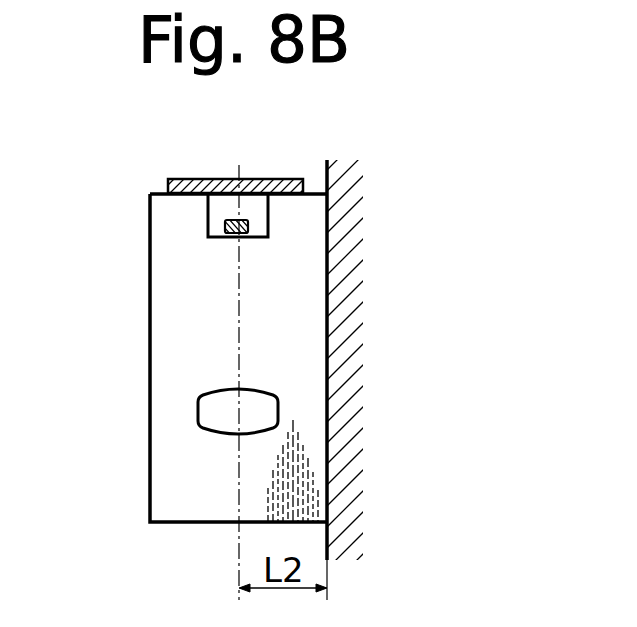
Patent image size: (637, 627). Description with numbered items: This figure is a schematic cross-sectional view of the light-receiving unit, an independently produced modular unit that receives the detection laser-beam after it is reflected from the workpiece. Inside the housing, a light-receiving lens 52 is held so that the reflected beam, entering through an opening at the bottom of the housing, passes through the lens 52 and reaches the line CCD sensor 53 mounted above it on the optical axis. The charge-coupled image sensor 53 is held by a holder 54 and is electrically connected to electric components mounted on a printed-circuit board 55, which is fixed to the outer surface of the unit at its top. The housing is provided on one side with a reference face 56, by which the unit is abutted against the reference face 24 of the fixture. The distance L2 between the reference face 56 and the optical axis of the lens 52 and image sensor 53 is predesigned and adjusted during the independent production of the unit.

The reference face of the fixture 24 is at (330, 548).
The light-receiving lens 52 is at (198, 420).
The line CCD sensor 53 is at (225, 228).
The holder 54 is at (268, 216).
The printed-circuit board 55 is at (198, 180).
The reference face 56 is at (328, 323).